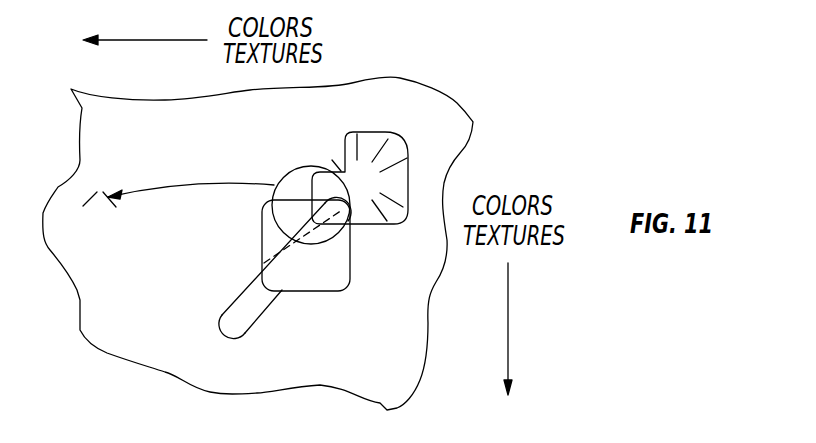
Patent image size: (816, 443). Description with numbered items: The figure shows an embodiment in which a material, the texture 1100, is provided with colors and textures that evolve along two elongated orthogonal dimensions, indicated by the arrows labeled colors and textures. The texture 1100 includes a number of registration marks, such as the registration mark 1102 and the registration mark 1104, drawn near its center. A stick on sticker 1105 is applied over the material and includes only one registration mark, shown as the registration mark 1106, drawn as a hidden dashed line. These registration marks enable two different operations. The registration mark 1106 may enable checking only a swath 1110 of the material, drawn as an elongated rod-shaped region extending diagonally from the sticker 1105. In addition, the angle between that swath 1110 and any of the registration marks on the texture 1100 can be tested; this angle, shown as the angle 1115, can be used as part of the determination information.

The texture 1100 is at (473, 121).
The registration mark 1102 is at (377, 132).
The registration mark 1104 is at (350, 132).
The stick on sticker 1105 is at (262, 233).
The registration mark 1106 is at (262, 252).
The swath 1110 is at (242, 305).
The angle 1115 is at (105, 191).